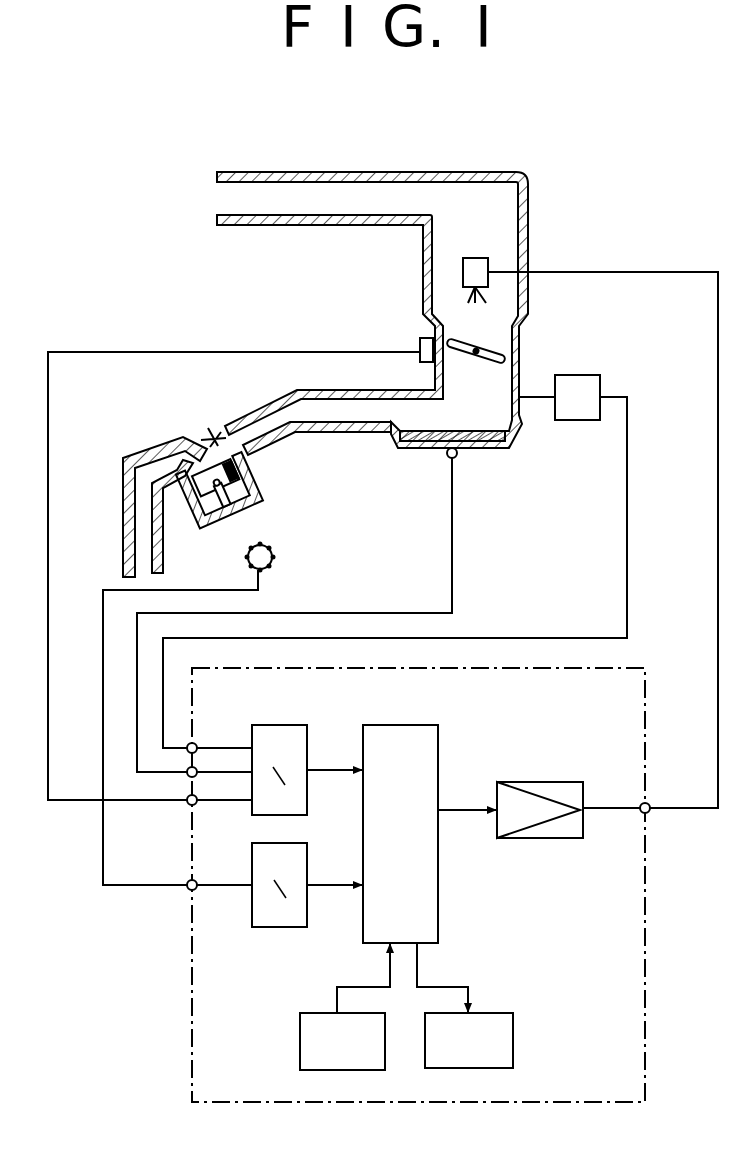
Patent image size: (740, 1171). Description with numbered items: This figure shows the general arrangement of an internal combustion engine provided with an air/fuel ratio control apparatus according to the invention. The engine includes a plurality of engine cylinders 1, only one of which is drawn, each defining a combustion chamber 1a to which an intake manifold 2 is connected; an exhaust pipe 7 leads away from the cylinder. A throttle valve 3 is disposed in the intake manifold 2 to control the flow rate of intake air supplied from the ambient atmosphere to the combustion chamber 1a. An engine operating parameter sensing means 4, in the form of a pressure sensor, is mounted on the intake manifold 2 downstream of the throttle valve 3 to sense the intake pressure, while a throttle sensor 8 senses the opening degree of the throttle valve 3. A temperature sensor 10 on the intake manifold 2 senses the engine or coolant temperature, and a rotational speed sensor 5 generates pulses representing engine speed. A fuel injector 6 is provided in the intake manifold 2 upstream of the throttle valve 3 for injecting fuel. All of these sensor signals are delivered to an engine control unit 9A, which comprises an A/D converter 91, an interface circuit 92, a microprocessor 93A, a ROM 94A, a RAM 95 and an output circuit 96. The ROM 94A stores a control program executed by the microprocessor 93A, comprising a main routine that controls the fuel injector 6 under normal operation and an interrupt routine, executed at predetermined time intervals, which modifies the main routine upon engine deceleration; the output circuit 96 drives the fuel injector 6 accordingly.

The engine cylinder 1 is at (258, 478).
The combustion chamber 1a is at (209, 428).
The intake manifold 2 is at (393, 391).
The throttle valve 3 is at (510, 345).
The engine operating parameter sensing means 4 is at (563, 420).
The rotational speed sensor 5 is at (273, 562).
The fuel injector 6 is at (472, 257).
The exhaust pipe 7 is at (150, 448).
The throttle sensor 8 is at (240, 546).
The engine control unit 9A is at (192, 1052).
The temperature sensor 10 is at (457, 459).
The A/D converter 91 is at (307, 735).
The interface circuit 92 is at (290, 927).
The microprocessor 93A is at (438, 735).
The ROM 94A is at (300, 1048).
The RAM 95 is at (513, 1068).
The output circuit 96 is at (529, 838).